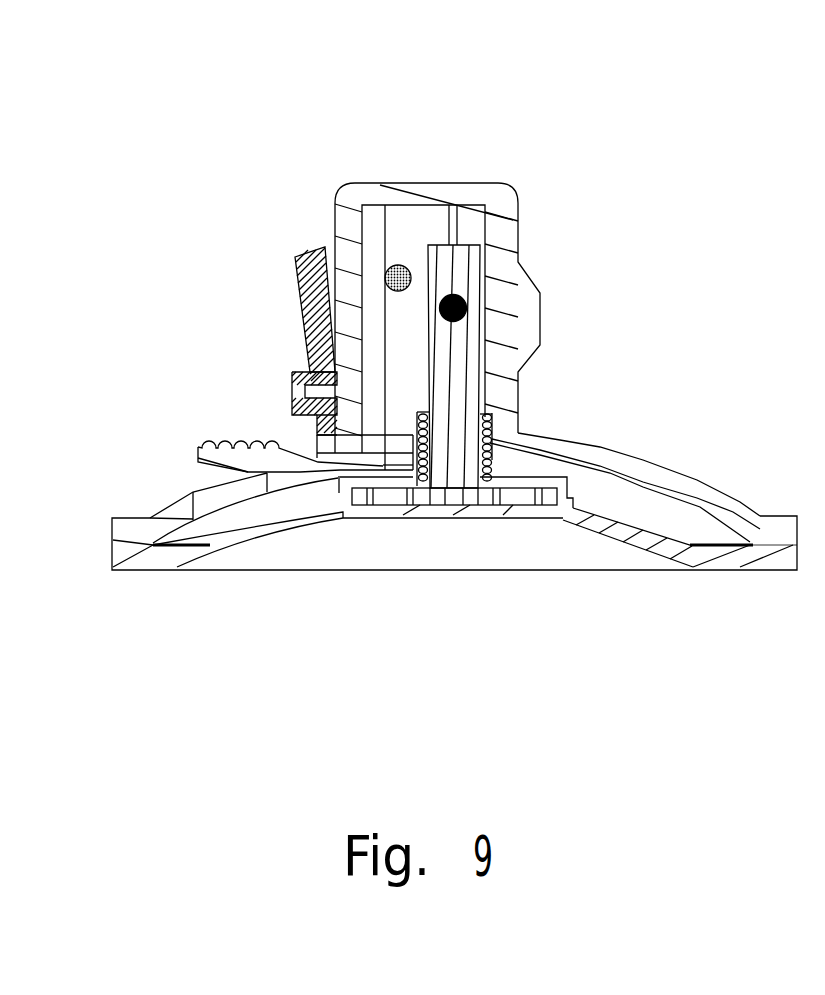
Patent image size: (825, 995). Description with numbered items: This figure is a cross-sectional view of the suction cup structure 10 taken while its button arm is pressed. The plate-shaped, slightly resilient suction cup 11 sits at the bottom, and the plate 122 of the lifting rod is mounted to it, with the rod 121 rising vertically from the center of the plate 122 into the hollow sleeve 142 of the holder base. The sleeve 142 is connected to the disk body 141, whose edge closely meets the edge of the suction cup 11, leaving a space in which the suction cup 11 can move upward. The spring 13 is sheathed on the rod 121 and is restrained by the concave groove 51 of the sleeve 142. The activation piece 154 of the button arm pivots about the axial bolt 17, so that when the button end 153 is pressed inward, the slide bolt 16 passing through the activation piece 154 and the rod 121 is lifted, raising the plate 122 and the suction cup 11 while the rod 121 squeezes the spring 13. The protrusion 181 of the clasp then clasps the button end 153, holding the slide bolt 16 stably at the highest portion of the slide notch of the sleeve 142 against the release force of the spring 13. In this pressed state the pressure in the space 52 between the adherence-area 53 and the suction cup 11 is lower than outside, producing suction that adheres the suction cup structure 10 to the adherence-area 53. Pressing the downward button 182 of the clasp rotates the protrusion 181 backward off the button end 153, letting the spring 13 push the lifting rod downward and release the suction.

The suction cup structure 10 is at (140, 83).
The suction cup 11 is at (247, 543).
The spring 13 is at (520, 424).
The disk body 141 is at (700, 483).
The sleeve 142 is at (440, 188).
The slide bolt 16 is at (463, 297).
The axial bolt 17 is at (406, 265).
The rod 121 is at (470, 330).
The plate 122 is at (517, 505).
The concave groove 51 is at (488, 413).
The space 52 is at (405, 555).
The adherence-area 53 is at (657, 570).
The button end 153 is at (300, 372).
The activation piece 154 is at (299, 250).
The protrusion 181 is at (303, 432).
The downward button 182 is at (198, 448).